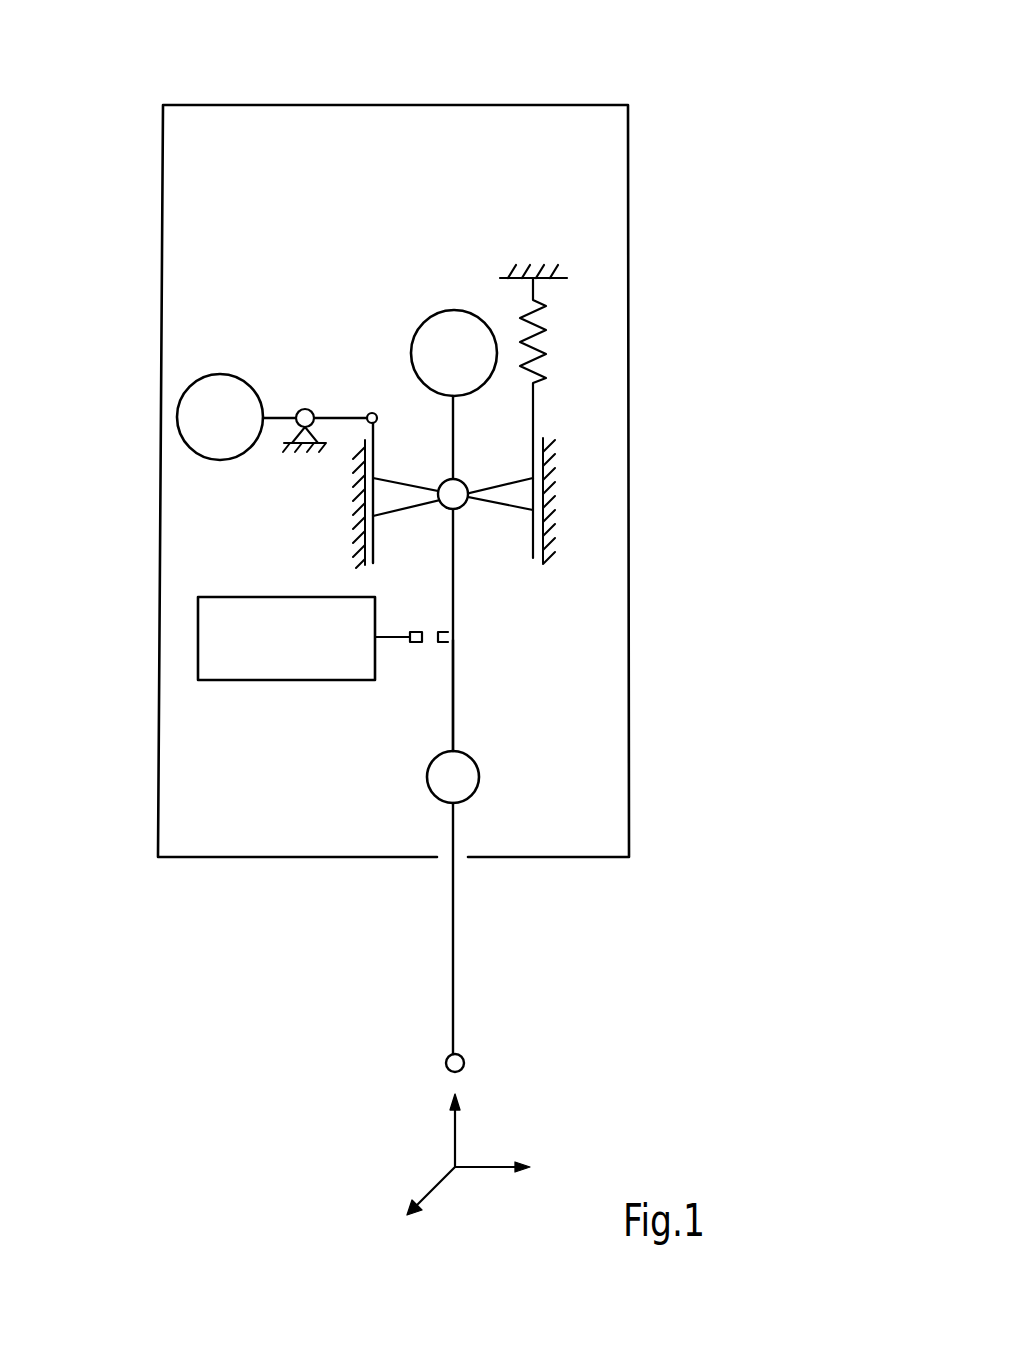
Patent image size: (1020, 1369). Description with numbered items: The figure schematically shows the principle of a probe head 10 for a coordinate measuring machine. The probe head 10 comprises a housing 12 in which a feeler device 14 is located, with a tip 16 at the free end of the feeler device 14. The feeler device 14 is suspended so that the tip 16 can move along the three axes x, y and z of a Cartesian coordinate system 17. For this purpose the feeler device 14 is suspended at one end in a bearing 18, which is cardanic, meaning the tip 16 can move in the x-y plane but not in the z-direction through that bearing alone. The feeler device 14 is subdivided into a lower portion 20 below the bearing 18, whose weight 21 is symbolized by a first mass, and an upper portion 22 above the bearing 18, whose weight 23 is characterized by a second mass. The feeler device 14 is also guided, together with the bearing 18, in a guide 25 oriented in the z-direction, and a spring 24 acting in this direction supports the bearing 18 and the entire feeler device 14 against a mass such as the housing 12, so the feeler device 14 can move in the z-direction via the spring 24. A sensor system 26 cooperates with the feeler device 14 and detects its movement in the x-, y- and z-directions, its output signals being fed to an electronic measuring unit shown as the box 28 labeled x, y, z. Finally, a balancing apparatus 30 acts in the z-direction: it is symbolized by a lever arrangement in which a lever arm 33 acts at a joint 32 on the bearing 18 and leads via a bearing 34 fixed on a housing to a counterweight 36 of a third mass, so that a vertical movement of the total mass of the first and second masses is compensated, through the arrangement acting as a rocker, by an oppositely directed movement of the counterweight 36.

The probe head 10 is at (660, 158).
The housing 12 is at (515, 103).
The feeler device 14 is at (457, 972).
The tip 16 is at (462, 1062).
The Cartesian coordinate system 17 is at (465, 1185).
The bearing 18 is at (456, 494).
The lower portion 20 is at (453, 693).
The weight 21 is at (470, 775).
The upper portion 22 is at (455, 452).
The weight 23 is at (451, 328).
The spring 24 is at (545, 352).
The guide 25 is at (545, 501).
The sensor system 26 is at (426, 646).
The evaluation unit 28 is at (228, 680).
The balancing apparatus 30 is at (231, 317).
The joint 32 is at (372, 412).
The lever arm 33 is at (335, 416).
The bearing 34 is at (299, 409).
The counterweight 36 is at (221, 445).